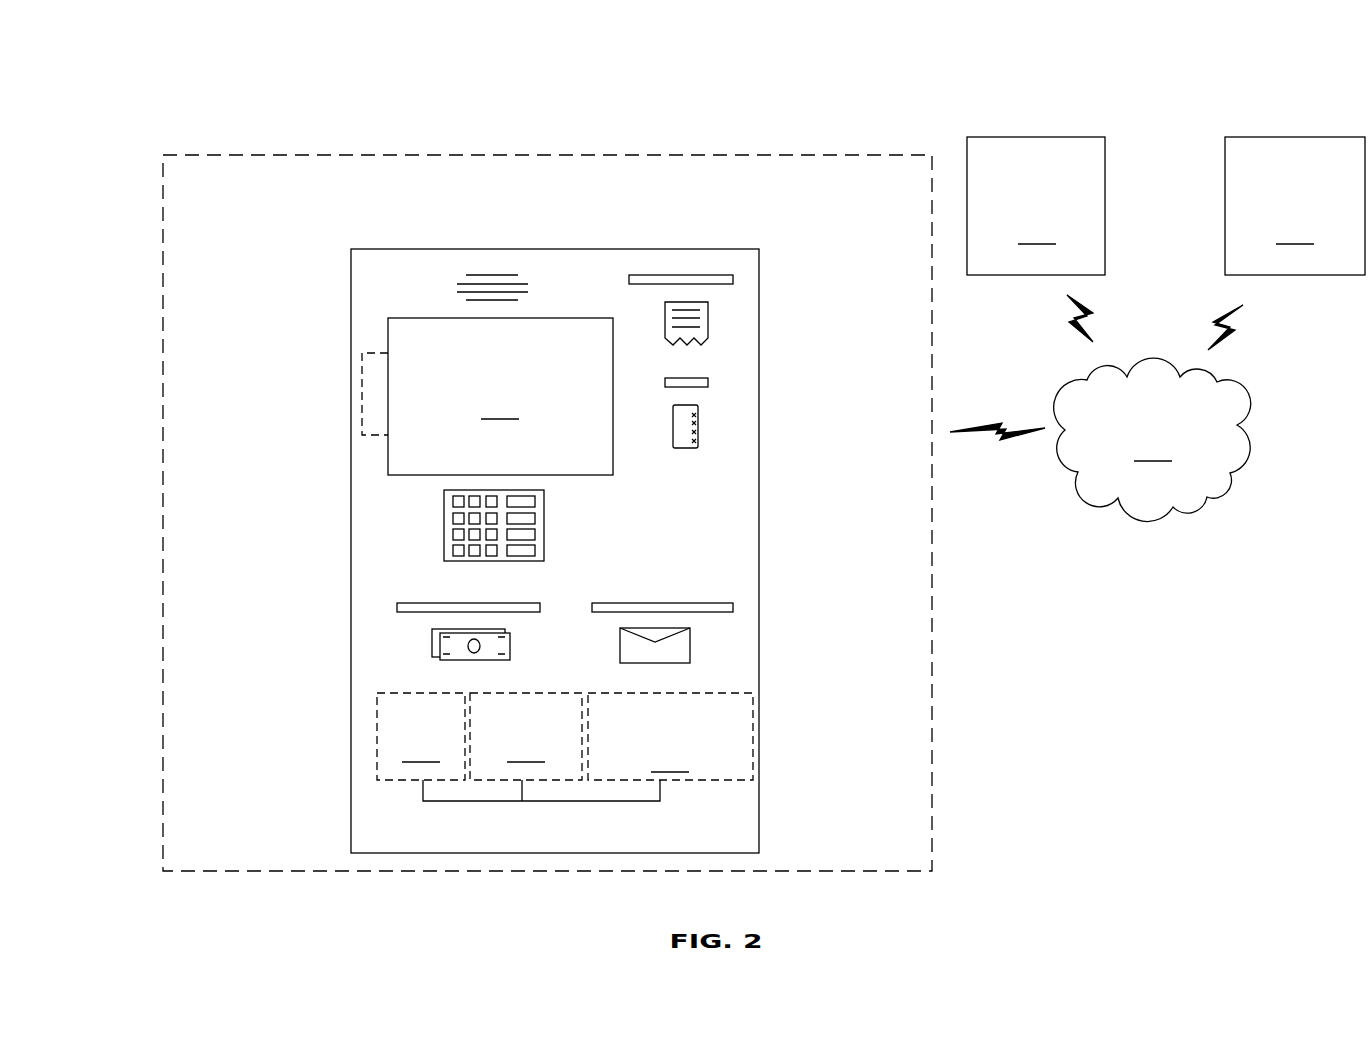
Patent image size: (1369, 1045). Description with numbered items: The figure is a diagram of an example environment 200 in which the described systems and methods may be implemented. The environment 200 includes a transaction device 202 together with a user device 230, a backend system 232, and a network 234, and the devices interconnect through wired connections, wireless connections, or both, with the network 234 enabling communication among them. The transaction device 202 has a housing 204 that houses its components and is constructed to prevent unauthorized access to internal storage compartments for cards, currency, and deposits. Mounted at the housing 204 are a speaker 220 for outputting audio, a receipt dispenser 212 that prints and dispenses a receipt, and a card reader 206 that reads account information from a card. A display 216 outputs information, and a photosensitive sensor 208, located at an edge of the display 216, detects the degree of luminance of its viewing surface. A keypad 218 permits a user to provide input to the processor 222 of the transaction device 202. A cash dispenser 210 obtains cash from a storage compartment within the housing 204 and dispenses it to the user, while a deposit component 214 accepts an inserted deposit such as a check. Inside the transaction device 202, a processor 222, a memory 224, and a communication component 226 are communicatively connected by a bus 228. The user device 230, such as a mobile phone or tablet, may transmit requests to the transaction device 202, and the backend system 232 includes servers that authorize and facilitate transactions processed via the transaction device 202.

The environment 200 is at (228, 51).
The transaction device 202 is at (570, 155).
The housing 204 is at (384, 249).
The card reader 206 is at (708, 383).
The photosensitive sensor 208 is at (362, 398).
The cash dispenser 210 is at (397, 606).
The receipt dispenser 212 is at (733, 280).
The deposit component 214 is at (733, 608).
The display 216 is at (500, 396).
The keypad 218 is at (444, 510).
The speaker 220 is at (500, 272).
The processor 222 is at (526, 736).
The memory 224 is at (421, 736).
The communication component 226 is at (670, 736).
The bus 228 is at (555, 803).
The user device 230 is at (1036, 206).
The backend system 232 is at (1295, 206).
The network 234 is at (1152, 439).